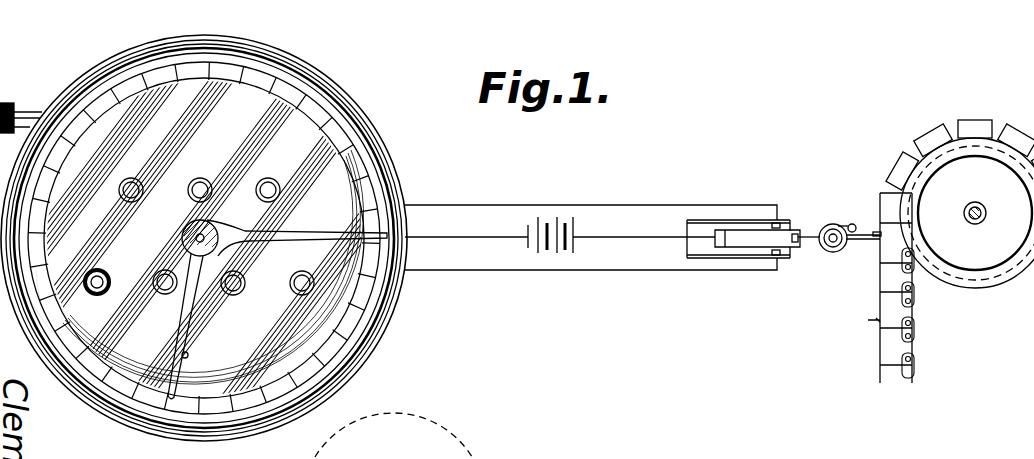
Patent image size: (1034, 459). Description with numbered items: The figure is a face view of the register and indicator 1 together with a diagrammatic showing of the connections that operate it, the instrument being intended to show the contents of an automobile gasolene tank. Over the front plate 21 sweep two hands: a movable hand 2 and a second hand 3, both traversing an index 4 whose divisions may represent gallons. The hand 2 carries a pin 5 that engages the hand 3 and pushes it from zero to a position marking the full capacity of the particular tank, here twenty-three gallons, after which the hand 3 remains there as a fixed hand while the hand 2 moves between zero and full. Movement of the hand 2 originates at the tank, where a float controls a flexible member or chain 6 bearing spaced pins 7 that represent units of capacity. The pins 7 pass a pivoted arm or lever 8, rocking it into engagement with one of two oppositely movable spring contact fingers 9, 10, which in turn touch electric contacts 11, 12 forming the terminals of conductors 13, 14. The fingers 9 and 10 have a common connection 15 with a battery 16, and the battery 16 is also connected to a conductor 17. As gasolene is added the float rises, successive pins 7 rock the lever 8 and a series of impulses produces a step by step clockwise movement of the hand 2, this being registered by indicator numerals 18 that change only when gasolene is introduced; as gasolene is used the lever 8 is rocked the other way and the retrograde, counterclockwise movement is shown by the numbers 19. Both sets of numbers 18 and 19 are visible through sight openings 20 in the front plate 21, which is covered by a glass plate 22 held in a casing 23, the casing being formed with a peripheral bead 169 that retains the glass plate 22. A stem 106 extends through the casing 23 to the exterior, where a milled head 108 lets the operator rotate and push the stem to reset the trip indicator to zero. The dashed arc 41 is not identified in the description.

The register and indicator 1 is at (374, 114).
The movable hand 2 is at (183, 328).
The fixed hand 3 is at (242, 232).
The index 4 is at (67, 318).
The pin 5 is at (190, 352).
The flexible member or chain 6 is at (885, 288).
The pins 7 is at (926, 132).
The pivoted arm or lever 8 is at (866, 242).
The spring contact finger 9 is at (792, 230).
The spring contact finger 10 is at (796, 248).
The electric contact 11 is at (778, 222).
The electric contact 12 is at (778, 258).
The conductor 13 is at (636, 205).
The conductor 14 is at (626, 270).
The common connection 15 is at (650, 237).
The battery 16 is at (548, 212).
The conductor 17 is at (490, 237).
The indicator numerals 18 is at (107, 277).
The numbers 19 is at (188, 192).
The sight openings 20 is at (120, 194).
The front plate 21 is at (177, 238).
The glass plate 22 is at (73, 350).
The casing 23 is at (363, 370).
The fender arc 41 is at (472, 452).
The stem 106 is at (30, 115).
The milled head 108 is at (8, 103).
The peripheral bead 169 is at (138, 412).